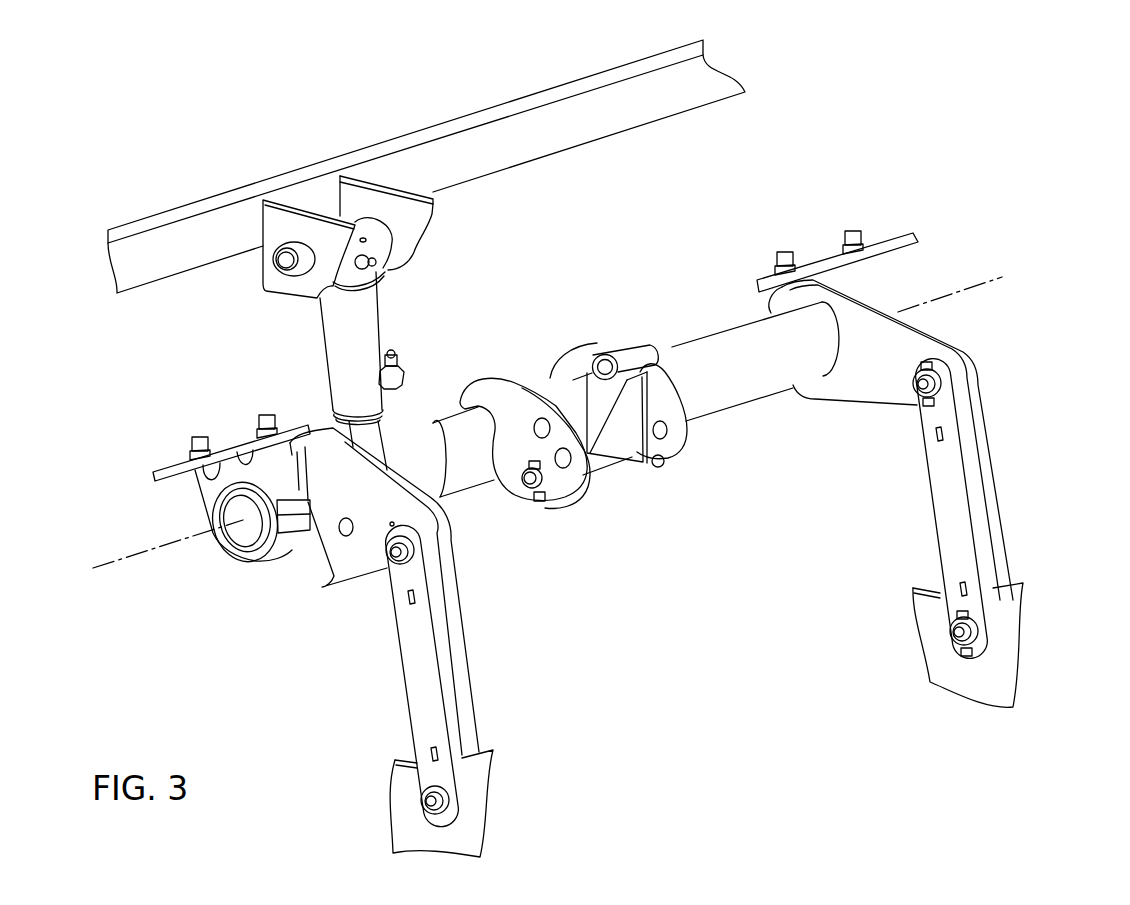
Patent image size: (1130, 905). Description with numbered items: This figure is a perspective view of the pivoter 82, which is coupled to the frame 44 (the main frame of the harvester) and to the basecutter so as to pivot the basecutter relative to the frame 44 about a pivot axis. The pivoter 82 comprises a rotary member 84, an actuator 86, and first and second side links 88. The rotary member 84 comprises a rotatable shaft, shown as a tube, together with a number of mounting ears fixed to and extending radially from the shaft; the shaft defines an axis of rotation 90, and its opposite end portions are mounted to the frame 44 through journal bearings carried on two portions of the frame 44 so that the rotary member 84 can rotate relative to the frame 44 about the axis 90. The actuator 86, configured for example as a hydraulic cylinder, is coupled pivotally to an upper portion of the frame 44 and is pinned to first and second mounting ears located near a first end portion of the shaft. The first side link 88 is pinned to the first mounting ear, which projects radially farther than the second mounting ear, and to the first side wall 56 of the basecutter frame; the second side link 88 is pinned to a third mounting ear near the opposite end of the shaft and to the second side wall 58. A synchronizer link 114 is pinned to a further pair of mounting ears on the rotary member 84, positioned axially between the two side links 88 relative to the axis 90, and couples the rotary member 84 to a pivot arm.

The frame 44 is at (476, 163).
The first side wall 56 is at (1008, 653).
The second side wall 58 is at (472, 830).
The pivoter 82 is at (838, 127).
The rotary member 84 is at (720, 352).
The actuator 86 is at (360, 322).
The side link 88 is at (465, 645).
The axis of rotation 90 is at (127, 562).
The synchronizer link 114 is at (620, 423).